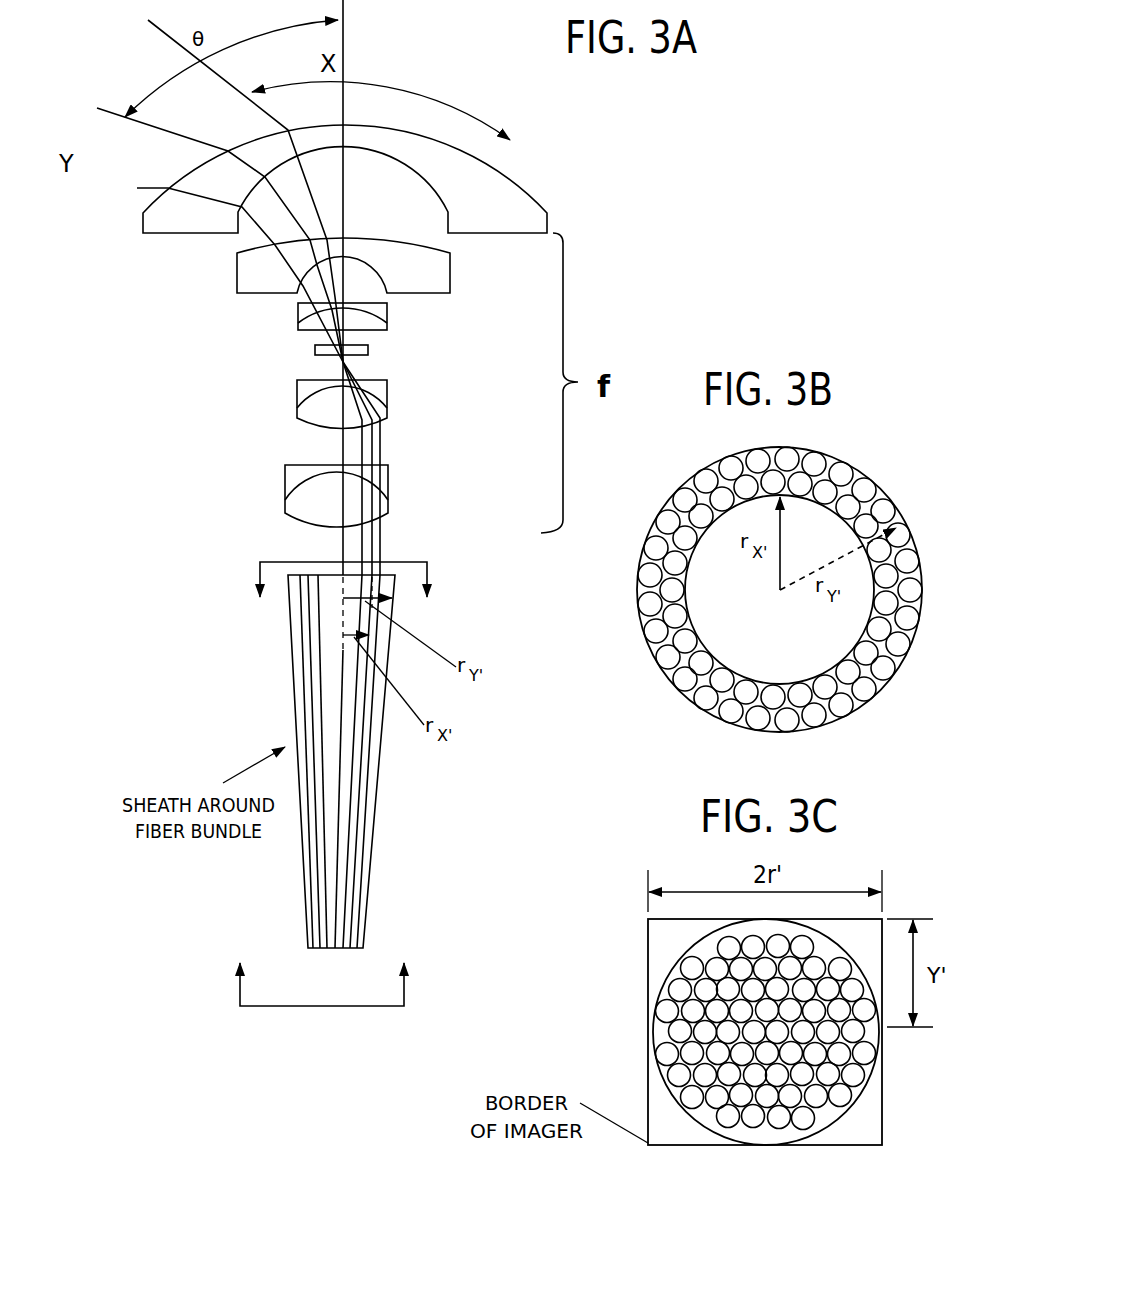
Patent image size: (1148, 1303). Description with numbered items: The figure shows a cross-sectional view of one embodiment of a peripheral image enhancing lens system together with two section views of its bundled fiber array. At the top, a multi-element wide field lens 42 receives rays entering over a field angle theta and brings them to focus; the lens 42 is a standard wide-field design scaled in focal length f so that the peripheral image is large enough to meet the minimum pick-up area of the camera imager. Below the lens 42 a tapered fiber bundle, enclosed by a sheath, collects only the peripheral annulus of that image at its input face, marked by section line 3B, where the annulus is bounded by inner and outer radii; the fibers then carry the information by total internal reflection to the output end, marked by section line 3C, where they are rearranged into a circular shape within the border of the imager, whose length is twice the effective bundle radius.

The multi-element wide field lens 42 is at (559, 184).
The section line 3B is at (351, 597).
The section line 3C is at (324, 967).